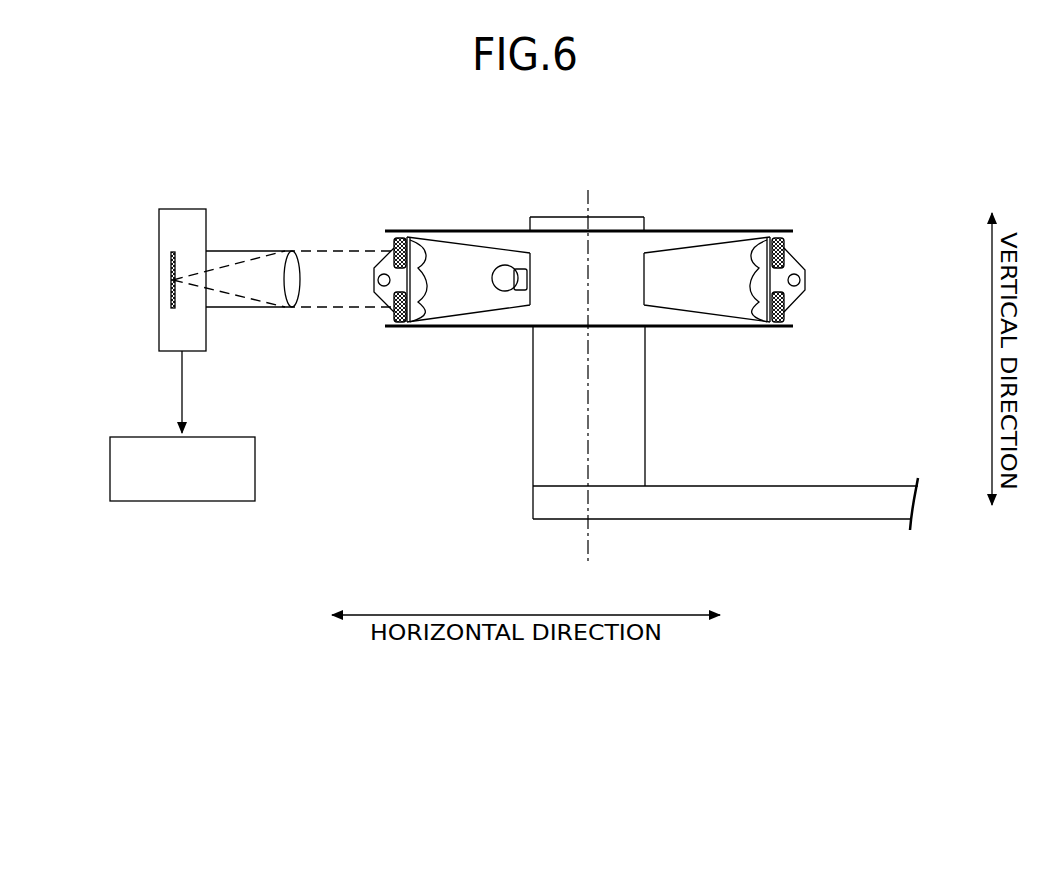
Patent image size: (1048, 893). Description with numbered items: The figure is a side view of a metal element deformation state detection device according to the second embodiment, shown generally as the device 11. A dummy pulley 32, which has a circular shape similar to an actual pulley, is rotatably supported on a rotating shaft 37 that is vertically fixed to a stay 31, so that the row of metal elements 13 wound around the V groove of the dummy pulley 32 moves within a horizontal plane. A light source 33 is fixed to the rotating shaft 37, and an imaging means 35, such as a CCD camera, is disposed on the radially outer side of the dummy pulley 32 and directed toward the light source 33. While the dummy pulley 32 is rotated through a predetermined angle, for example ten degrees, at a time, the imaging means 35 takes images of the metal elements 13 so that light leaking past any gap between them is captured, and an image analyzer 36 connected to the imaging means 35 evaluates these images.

The imaging device / bobbin assembly 11 is at (808, 259).
The metal element 13 is at (371, 264).
The stay 31 is at (790, 510).
The dummy pulley 32 is at (683, 229).
The light source 33 is at (496, 271).
The imaging means 35 is at (190, 220).
The image analyzer 36 is at (216, 501).
The rotating shaft 37 is at (631, 403).